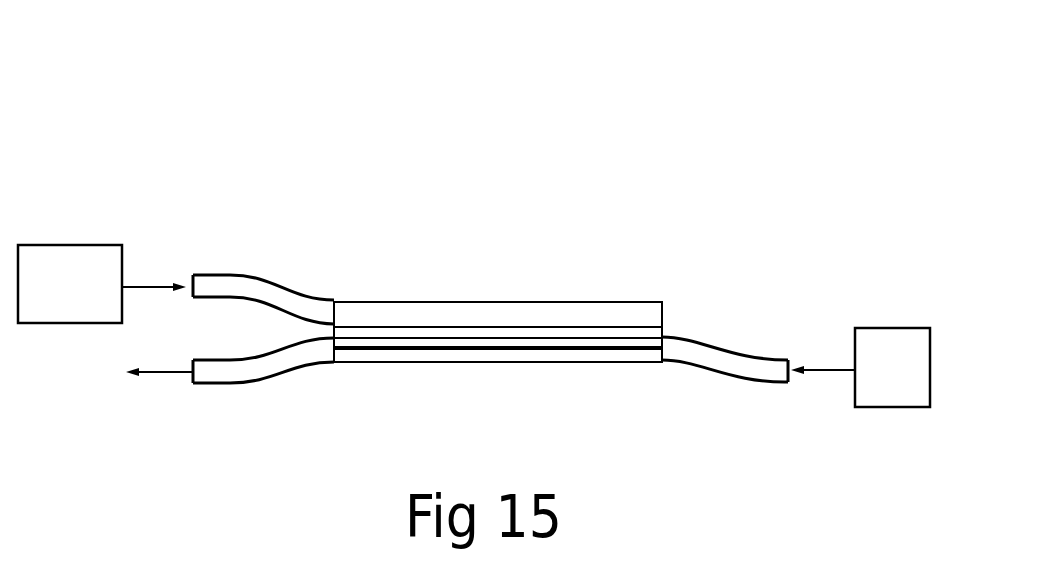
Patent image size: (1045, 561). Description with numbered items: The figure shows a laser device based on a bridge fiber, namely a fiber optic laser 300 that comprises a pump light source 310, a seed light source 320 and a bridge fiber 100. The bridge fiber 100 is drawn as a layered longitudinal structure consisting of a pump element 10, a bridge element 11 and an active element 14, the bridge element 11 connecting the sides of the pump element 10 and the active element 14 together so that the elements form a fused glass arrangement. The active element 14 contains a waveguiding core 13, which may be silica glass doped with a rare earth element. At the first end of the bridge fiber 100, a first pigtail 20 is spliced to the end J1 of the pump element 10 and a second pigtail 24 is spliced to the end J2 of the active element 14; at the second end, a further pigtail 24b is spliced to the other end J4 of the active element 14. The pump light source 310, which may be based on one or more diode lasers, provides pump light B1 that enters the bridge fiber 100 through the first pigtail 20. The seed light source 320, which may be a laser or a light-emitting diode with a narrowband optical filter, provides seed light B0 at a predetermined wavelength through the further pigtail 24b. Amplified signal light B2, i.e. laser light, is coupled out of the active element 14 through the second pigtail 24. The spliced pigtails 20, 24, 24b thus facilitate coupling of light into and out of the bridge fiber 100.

The fiber optic laser 300 is at (196, 57).
The pump light source 310 is at (66, 245).
The seed light source 320 is at (895, 328).
The bridge fiber 100 is at (485, 274).
The pump element 10 is at (579, 302).
The bridge element 11 is at (577, 332).
The core 13 is at (517, 350).
The active element 14 is at (462, 362).
The first pigtail 20 is at (246, 275).
The second pigtail 24 is at (250, 383).
The further pigtail 24b is at (780, 383).
The end of pump element J1 is at (335, 302).
The end of active element J2 is at (333, 362).
The other end of active element J4 is at (664, 362).
The seed light B0 is at (823, 388).
The pump light B1 is at (154, 269).
The amplified signal light B2 is at (138, 374).